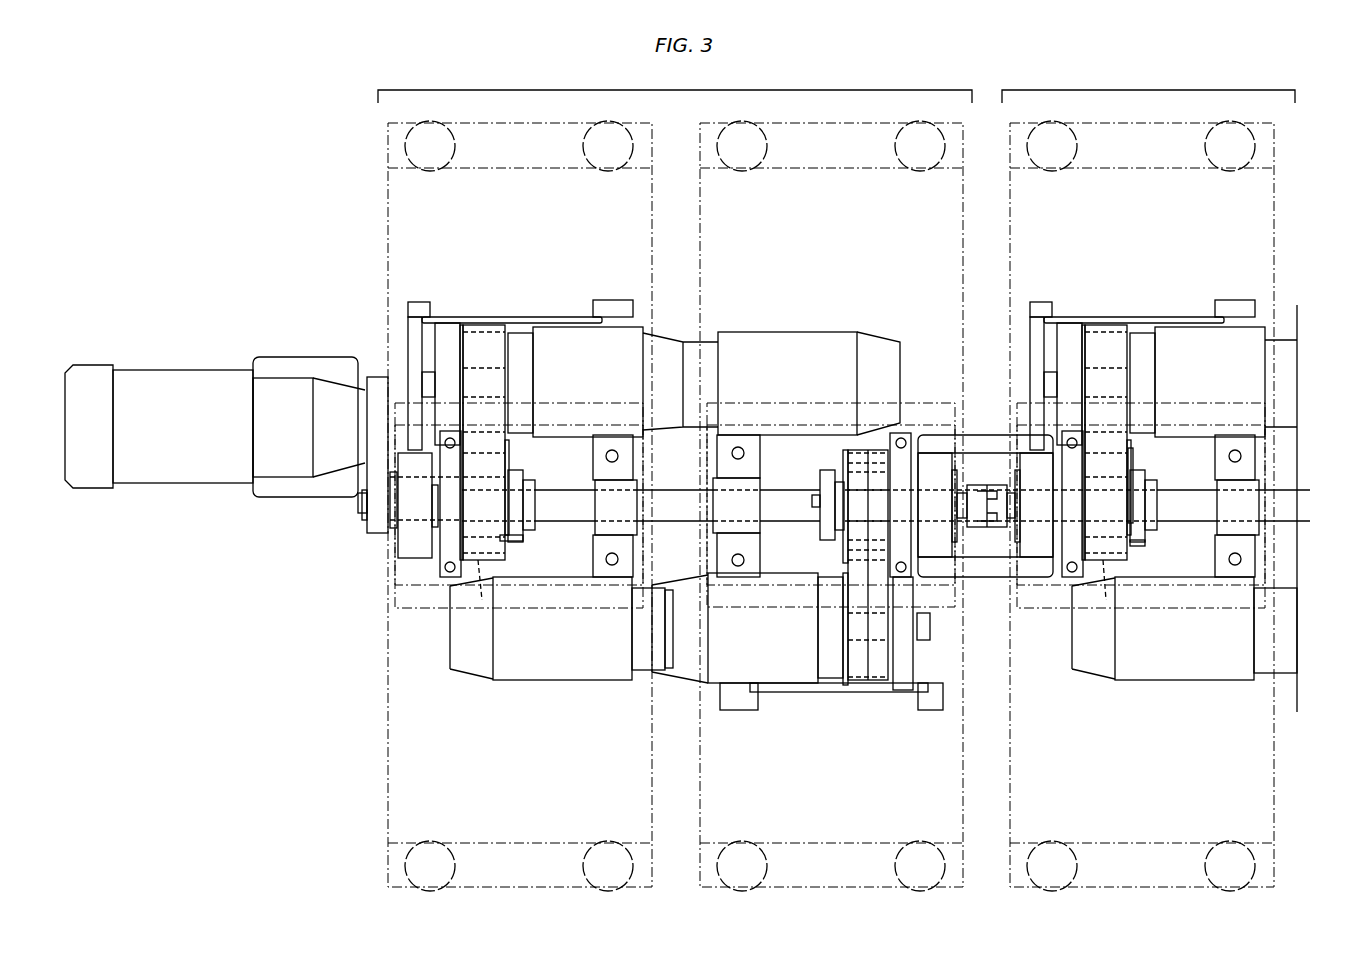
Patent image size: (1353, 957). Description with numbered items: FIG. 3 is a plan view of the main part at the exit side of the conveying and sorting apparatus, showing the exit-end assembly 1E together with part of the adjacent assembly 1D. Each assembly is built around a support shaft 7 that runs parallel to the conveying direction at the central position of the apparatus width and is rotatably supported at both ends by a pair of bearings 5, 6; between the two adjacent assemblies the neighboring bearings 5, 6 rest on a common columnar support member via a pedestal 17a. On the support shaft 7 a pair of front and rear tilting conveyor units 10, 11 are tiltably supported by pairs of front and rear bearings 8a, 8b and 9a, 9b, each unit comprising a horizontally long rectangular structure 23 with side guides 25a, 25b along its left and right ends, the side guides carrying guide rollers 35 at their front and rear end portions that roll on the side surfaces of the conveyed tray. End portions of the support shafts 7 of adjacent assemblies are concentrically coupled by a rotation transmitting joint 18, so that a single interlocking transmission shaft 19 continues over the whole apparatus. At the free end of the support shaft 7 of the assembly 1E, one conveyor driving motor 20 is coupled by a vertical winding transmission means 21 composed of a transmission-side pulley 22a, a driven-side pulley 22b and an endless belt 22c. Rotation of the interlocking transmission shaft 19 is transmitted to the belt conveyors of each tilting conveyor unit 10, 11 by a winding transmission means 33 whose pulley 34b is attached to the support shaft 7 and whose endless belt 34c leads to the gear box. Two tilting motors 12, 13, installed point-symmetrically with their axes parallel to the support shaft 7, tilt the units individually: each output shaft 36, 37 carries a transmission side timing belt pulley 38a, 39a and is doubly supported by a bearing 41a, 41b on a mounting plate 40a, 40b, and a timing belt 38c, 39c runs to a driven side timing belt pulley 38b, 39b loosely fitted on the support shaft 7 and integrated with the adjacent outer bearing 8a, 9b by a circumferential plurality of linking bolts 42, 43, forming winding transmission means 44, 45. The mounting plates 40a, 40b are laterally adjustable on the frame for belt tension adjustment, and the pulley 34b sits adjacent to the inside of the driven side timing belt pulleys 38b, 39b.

The assembly 1E is at (675, 84).
The assembly 1D is at (1148, 84).
The bearing 5 is at (943, 470).
The bearing 6 is at (412, 536).
The support shaft 7 is at (668, 512).
The bearing 8a is at (905, 500).
The bearing 8b is at (738, 500).
The bearing 9a is at (613, 497).
The bearing 9b is at (455, 540).
The tilting conveyor unit 10 is at (940, 788).
The tilting conveyor unit 11 is at (545, 742).
The tilting motor 12 is at (583, 652).
The tilting motor 13 is at (824, 368).
The pedestal 17a is at (982, 445).
The rotation transmitting joint 18 is at (997, 527).
The interlocking transmission shaft 19 is at (687, 580).
The conveyor driving motor 20 is at (163, 398).
The winding transmission means 21 is at (365, 426).
The transmission-side pulley 22a is at (373, 378).
The driven-side pulley 22b is at (358, 503).
The endless belt 22c is at (372, 456).
The structure 23 is at (740, 262).
The side guide 25a is at (520, 860).
The side guide 25b is at (524, 165).
The winding transmission means 33 is at (532, 506).
The driven-side pulley 34b is at (572, 560).
The endless belt 34c is at (518, 475).
The guide roller 35 is at (583, 148).
The output shaft 36 is at (930, 636).
The output shaft 37 is at (480, 378).
The transmission side timing belt pulley 38a is at (843, 625).
The driven side timing belt pulley 38b is at (843, 457).
The timing belt 38c is at (863, 655).
The transmission side timing belt pulley 39a is at (460, 353).
The driven side timing belt pulley 39b is at (462, 508).
The timing belt 39c is at (490, 413).
The mounting plate 40a is at (796, 694).
The mounting plate 40b is at (524, 315).
The bearing 41a is at (907, 658).
The bearing 41b is at (448, 335).
The linking bolt 42 is at (868, 480).
The linking bolt 43 is at (482, 580).
The winding transmission means 44 is at (872, 686).
The winding transmission means 45 is at (485, 326).